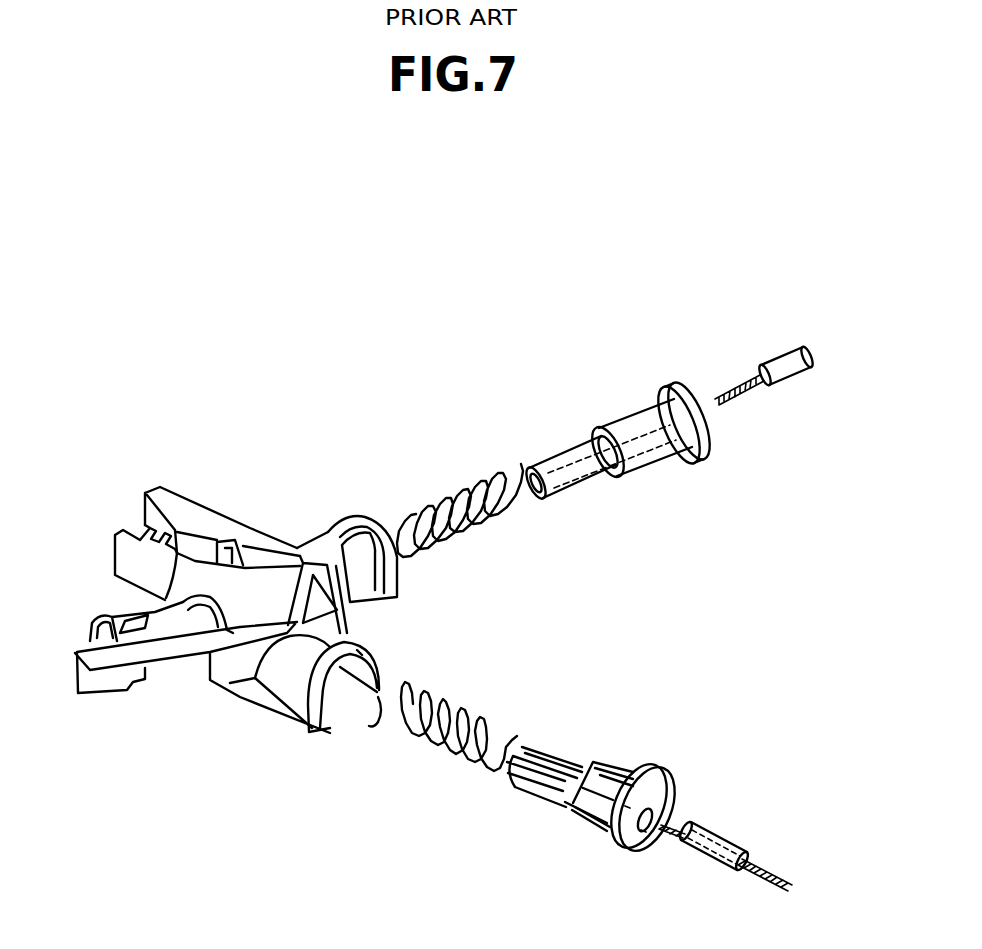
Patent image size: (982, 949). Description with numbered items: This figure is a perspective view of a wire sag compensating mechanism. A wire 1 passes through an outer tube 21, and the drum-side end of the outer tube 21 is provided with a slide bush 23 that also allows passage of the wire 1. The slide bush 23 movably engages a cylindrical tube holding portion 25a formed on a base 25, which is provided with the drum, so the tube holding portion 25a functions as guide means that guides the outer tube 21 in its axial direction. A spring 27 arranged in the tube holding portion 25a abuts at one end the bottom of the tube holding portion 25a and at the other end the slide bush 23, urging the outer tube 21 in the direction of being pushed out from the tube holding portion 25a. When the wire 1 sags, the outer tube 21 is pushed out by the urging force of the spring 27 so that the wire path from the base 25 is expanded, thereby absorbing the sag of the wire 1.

The wire 1 is at (680, 812).
The outer tube 21 is at (783, 380).
The slide bush 23 is at (567, 480).
The base 25 is at (193, 513).
The tube holding portion 25a is at (335, 550).
The spring 27 is at (492, 513).